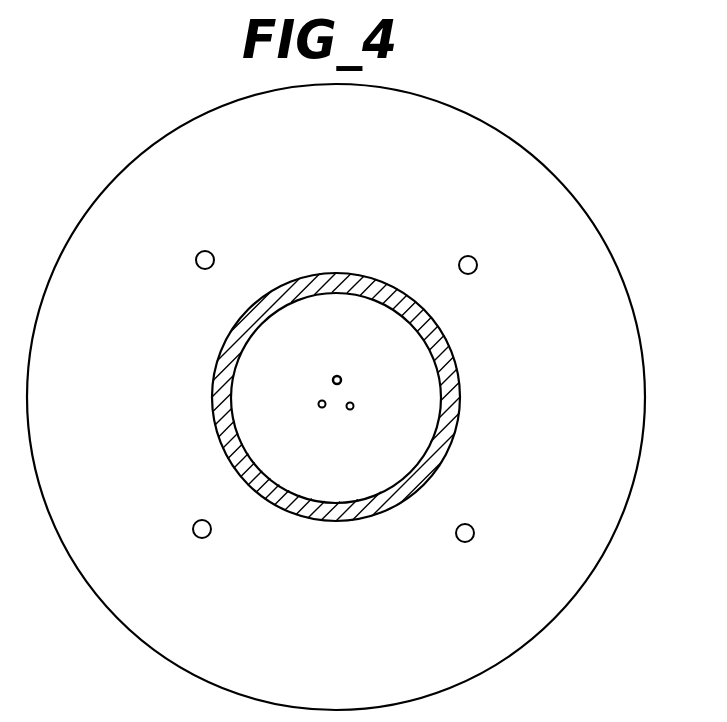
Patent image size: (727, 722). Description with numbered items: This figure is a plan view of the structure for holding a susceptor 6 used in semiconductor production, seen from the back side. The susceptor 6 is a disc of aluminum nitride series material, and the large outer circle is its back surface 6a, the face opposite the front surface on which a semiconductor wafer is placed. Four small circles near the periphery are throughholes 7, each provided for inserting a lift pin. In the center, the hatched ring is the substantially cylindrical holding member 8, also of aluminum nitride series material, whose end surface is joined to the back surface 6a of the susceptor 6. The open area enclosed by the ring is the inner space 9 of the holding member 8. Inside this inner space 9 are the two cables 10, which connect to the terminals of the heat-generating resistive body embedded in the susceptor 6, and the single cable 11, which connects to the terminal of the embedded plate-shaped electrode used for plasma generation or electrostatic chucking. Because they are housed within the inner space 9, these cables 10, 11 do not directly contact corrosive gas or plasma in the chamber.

The susceptor 6 is at (569, 172).
The back surface 6a is at (580, 265).
The throughhole 7 is at (478, 265).
The holding member 8 is at (445, 362).
The inner space 9 is at (363, 480).
The cables 10 is at (318, 409).
The cable 11 is at (341, 376).